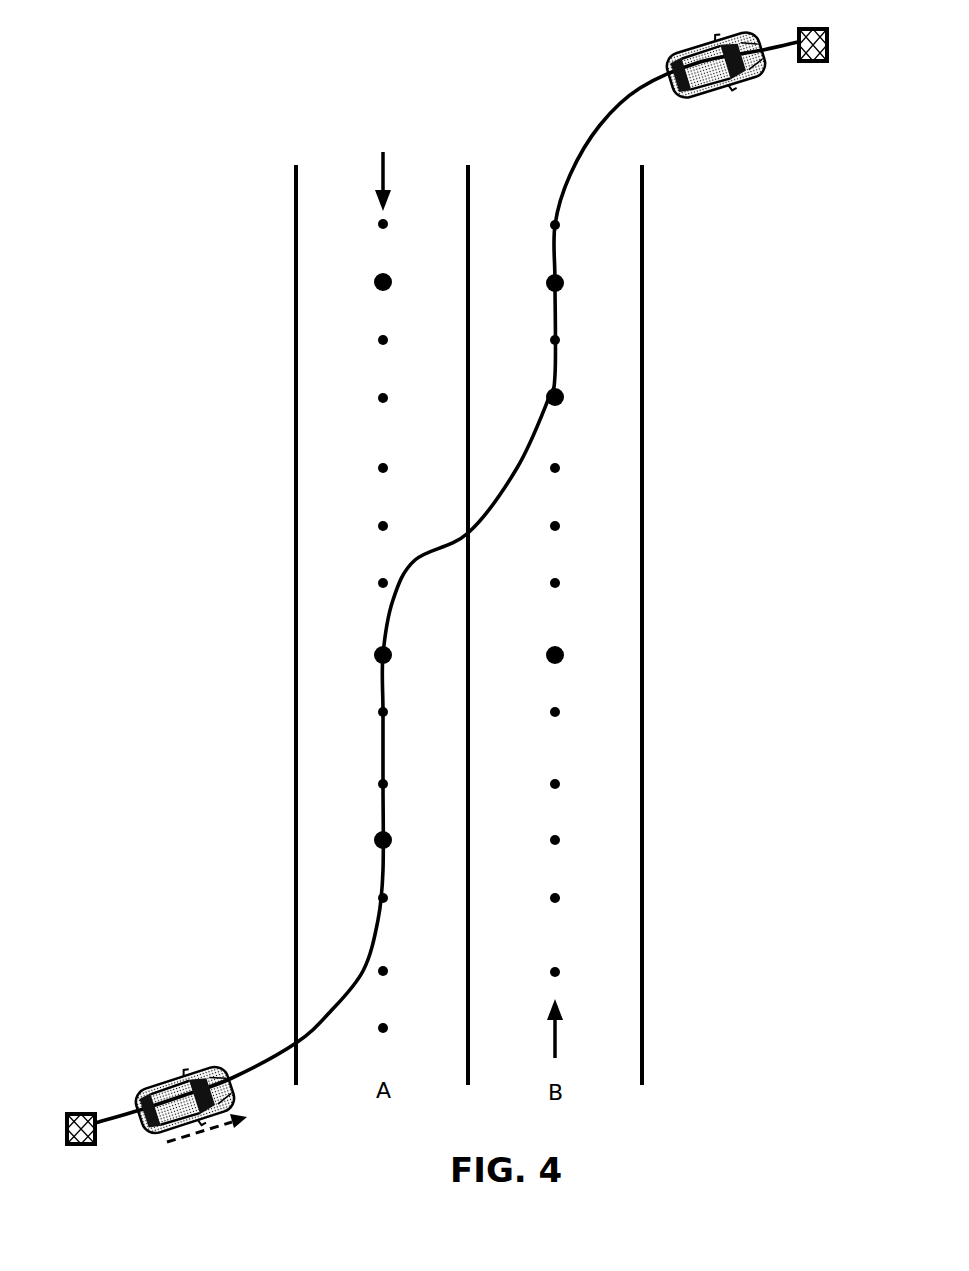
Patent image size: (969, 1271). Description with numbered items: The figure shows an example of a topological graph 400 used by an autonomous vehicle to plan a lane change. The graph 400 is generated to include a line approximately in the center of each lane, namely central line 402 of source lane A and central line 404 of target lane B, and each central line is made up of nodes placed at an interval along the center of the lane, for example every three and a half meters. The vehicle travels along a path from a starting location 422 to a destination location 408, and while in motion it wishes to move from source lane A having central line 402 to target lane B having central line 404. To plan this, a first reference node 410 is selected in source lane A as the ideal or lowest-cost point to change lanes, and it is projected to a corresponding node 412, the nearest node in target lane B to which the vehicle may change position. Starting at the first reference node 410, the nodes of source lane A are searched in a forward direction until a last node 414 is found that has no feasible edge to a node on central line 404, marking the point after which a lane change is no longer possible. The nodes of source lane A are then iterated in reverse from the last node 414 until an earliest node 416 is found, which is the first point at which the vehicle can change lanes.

The topological graph 400 is at (196, 98).
The central line 402 is at (406, 181).
The central line 404 is at (577, 1028).
The destination location 408 is at (810, 63).
The first reference node 410 is at (377, 664).
The corresponding node 412 is at (562, 403).
The last node 414 is at (376, 290).
The earliest node 416 is at (377, 848).
The starting location 422 is at (82, 1114).